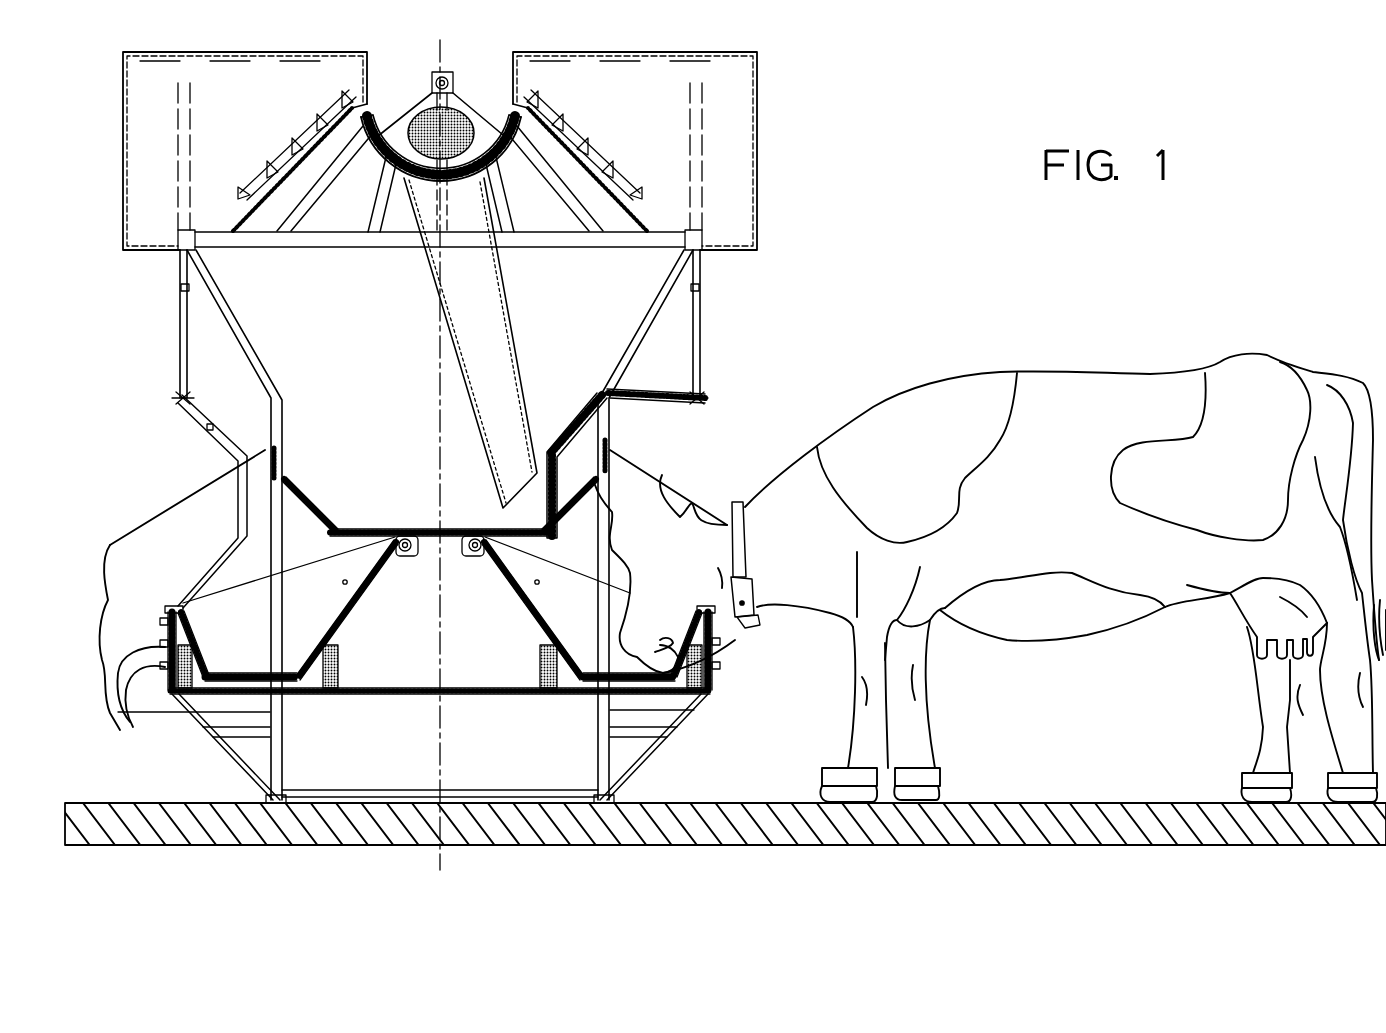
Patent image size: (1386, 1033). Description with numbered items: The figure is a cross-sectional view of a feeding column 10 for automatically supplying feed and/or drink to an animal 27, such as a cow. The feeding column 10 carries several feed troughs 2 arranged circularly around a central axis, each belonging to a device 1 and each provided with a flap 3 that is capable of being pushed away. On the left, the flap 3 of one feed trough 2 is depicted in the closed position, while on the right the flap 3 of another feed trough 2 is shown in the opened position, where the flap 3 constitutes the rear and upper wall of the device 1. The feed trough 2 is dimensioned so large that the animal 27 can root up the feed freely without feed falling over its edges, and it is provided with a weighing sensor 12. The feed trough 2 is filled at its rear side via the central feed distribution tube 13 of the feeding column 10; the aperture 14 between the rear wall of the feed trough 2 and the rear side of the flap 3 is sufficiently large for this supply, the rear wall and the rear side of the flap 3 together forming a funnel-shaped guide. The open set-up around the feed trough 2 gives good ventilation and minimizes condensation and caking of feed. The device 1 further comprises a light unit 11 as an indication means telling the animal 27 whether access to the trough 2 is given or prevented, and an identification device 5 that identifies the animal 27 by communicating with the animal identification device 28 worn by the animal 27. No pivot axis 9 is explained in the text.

The device 1 is at (873, 355).
The feed trough 2 is at (347, 583).
The flap 3 is at (213, 430).
The identification device 5 is at (182, 703).
The pivot axis 9 is at (176, 398).
The feeding column 10 is at (179, 292).
The light unit 11 is at (163, 648).
The weighing sensor 12 is at (540, 676).
The central feed distribution tube 13 is at (510, 316).
The aperture 14 is at (390, 538).
The animal 27 is at (1008, 623).
The animal identification device 28 is at (757, 616).